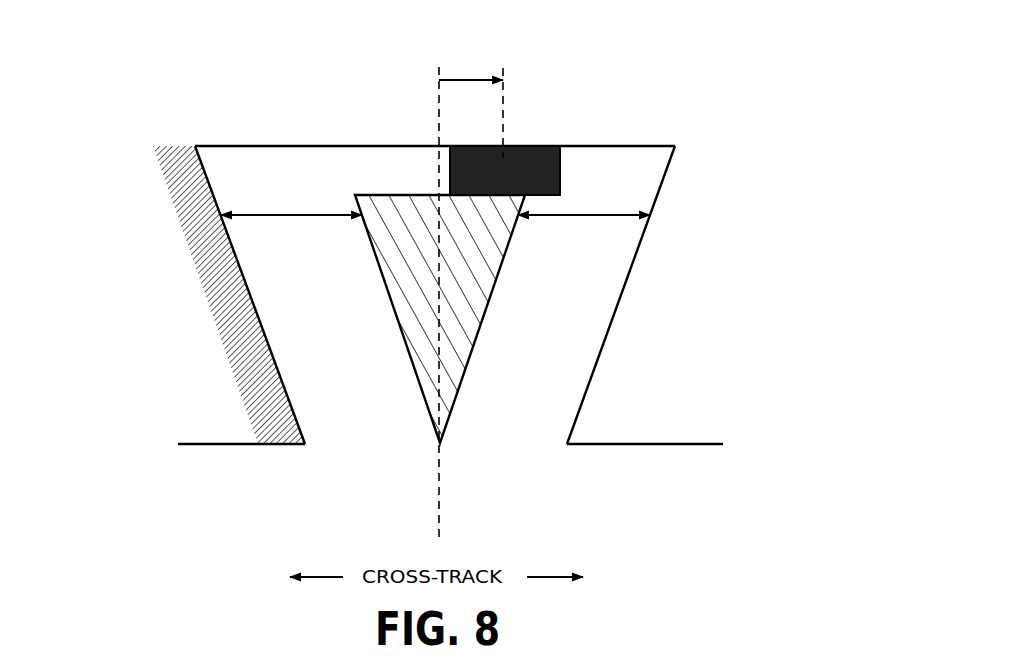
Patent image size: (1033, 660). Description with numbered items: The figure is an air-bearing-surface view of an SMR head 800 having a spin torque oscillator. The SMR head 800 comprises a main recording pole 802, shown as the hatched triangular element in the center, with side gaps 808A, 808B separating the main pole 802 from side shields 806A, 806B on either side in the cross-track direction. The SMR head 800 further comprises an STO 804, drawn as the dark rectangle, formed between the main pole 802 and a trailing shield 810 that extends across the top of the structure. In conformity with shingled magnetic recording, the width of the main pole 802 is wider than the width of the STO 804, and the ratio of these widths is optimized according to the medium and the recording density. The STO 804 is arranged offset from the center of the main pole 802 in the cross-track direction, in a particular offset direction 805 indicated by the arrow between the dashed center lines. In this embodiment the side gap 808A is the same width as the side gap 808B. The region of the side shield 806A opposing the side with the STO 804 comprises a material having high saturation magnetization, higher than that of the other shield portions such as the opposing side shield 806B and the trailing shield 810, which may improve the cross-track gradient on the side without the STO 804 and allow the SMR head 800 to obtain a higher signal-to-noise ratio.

The SMR head 800 is at (402, 281).
The main pole 802 is at (478, 335).
The STO 804 is at (527, 153).
The offset direction 805 is at (440, 99).
The side shield 806A is at (268, 425).
The side shield 806B is at (628, 422).
The side gap 808A is at (293, 215).
The side gap 808B is at (565, 218).
The trailing shield 810 is at (630, 137).